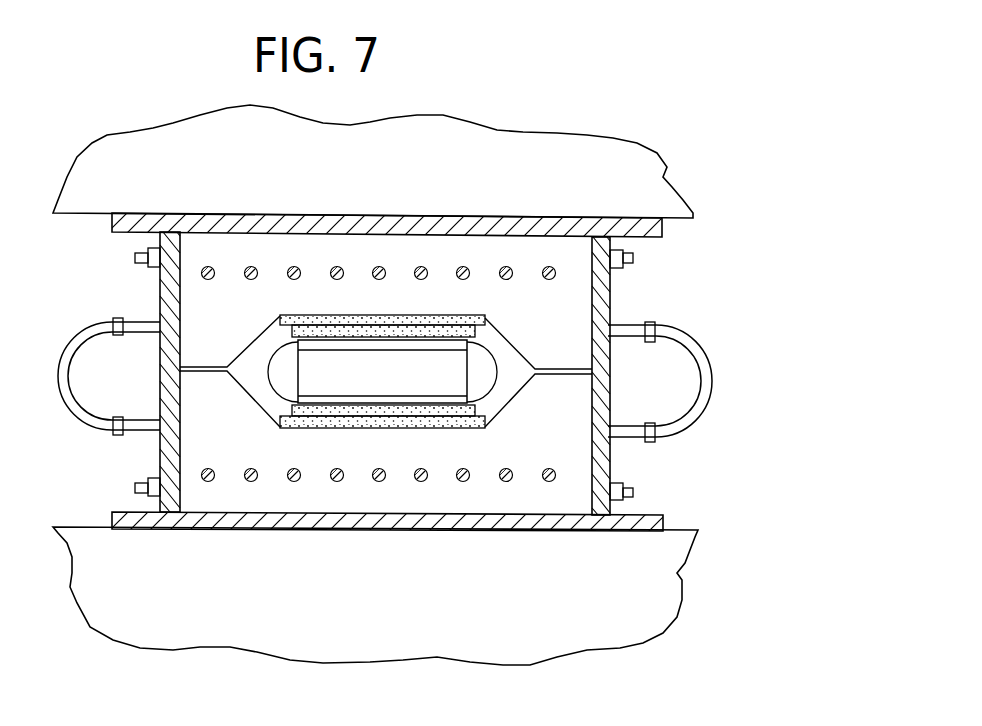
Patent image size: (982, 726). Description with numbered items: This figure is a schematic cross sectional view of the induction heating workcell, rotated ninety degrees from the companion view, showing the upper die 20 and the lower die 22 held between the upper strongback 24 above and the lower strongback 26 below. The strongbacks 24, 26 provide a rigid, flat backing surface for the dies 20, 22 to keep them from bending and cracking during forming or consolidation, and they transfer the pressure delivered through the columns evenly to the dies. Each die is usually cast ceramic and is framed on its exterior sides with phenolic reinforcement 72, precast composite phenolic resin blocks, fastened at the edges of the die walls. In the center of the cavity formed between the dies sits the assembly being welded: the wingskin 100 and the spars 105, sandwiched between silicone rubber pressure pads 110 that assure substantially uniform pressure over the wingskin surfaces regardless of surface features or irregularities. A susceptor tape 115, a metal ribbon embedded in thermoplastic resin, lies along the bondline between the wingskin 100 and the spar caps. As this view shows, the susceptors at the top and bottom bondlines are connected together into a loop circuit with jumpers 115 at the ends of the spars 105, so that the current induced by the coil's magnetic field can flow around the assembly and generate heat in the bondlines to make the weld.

The upper die 20 is at (230, 320).
The lower die 22 is at (500, 509).
The upper strongback 24 is at (665, 176).
The lower strongback 26 is at (670, 592).
The phenolic reinforcement 72 is at (157, 275).
The wingskin 100 is at (487, 428).
The spar 105 is at (303, 378).
The silicone rubber pressure pad 110 is at (487, 318).
The susceptor tape / jumper 115 is at (307, 406).